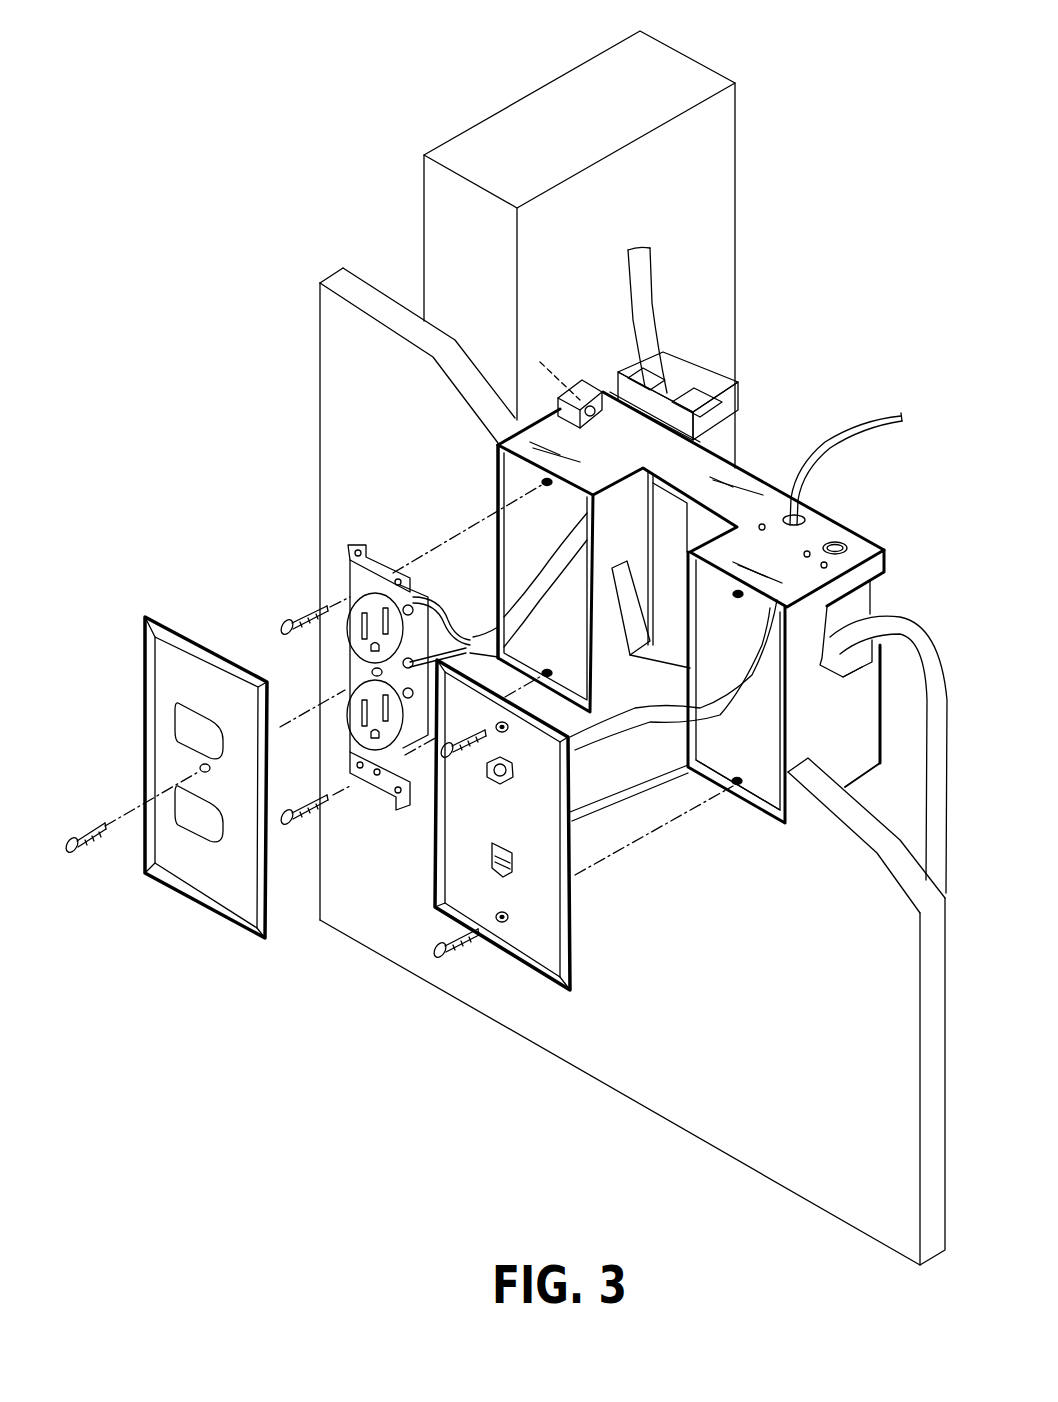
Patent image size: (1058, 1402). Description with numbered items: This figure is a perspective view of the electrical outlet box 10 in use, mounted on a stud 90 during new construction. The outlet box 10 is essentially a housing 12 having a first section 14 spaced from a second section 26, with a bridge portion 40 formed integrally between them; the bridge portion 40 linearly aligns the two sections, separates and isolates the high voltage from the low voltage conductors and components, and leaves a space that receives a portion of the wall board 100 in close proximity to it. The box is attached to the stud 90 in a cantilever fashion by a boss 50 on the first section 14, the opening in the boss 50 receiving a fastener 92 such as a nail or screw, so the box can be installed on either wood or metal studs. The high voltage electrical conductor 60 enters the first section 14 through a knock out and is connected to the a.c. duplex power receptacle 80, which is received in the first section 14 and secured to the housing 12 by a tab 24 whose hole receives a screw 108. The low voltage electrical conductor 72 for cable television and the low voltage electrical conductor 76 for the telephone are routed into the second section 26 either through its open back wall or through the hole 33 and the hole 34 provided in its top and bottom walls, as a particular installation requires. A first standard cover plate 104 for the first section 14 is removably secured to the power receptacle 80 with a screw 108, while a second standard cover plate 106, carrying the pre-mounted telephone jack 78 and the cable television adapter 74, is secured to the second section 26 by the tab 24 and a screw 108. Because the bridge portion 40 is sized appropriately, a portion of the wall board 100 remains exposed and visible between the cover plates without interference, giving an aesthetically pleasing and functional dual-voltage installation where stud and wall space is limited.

The electrical outlet box 10 is at (762, 403).
The housing 12 is at (820, 484).
The first section 14 is at (520, 428).
The tab 24 is at (740, 792).
The second section 26 is at (866, 788).
The hole 33 is at (840, 540).
The hole 34 is at (828, 566).
The bridge portion 40 is at (717, 468).
The boss 50 is at (592, 387).
The high voltage electrical conductor 60 is at (660, 330).
The low voltage electrical conductor for cable television 72 is at (640, 728).
The cable television (CATV) electrical component 74 is at (510, 780).
The low voltage electrical conductor for a telephone 76 is at (637, 798).
The telephone (jack) 78 is at (515, 872).
The electrical duplex power receptacle 80 is at (372, 562).
The stud 90 is at (722, 228).
The fastener 92 is at (578, 390).
The wall board 100 is at (343, 402).
The first standard cover plate 104 is at (150, 738).
The second standard cover plate 106 is at (572, 930).
The screw 108 is at (290, 622).